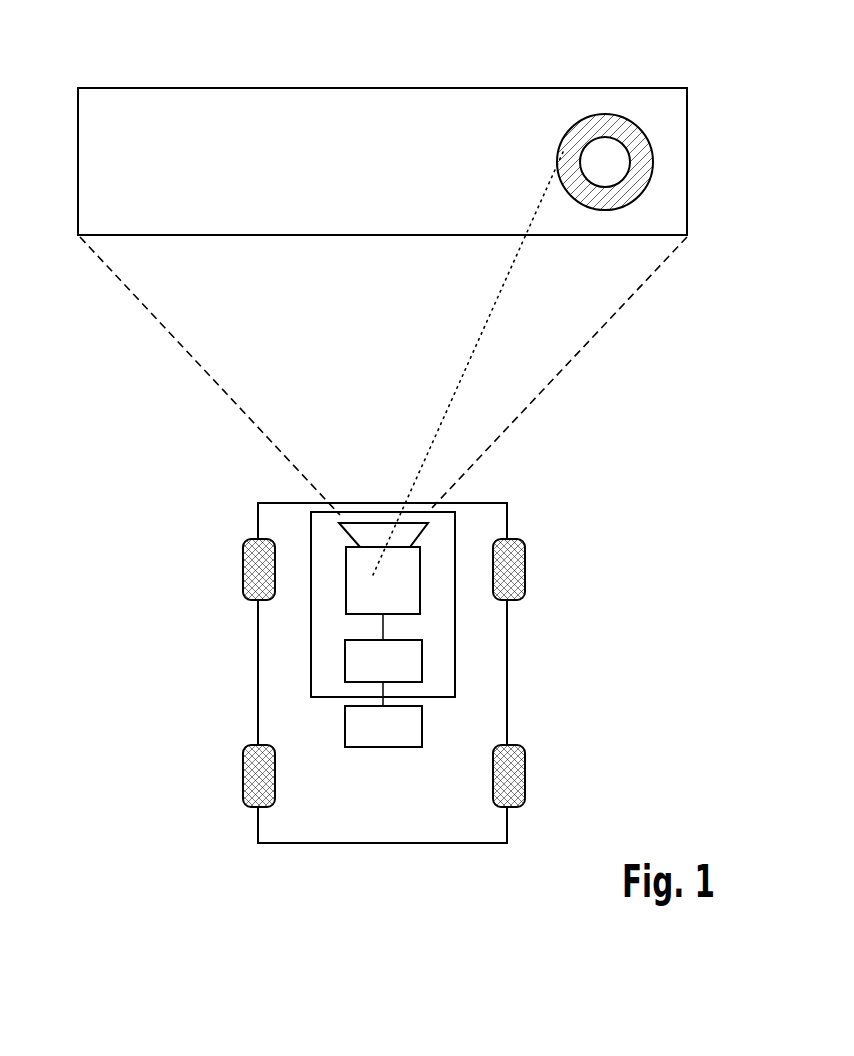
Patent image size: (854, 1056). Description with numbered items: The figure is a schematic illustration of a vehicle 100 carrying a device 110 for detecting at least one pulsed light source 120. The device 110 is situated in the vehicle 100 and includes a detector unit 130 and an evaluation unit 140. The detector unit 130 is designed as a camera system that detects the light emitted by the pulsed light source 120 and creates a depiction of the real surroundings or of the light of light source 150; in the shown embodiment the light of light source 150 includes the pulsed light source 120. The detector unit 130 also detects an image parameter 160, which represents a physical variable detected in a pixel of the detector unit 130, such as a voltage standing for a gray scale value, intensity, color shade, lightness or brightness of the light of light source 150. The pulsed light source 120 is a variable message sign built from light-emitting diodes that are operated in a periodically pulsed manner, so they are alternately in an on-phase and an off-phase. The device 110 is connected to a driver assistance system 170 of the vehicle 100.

The vehicle 100 is at (508, 672).
The device 110 is at (457, 522).
The pulsed light source 120 is at (603, 113).
The detector unit 130 is at (345, 600).
The evaluation unit 140 is at (345, 660).
The light source 150 is at (381, 87).
The image parameter 160 is at (473, 348).
The driver assistance system 170 is at (345, 716).